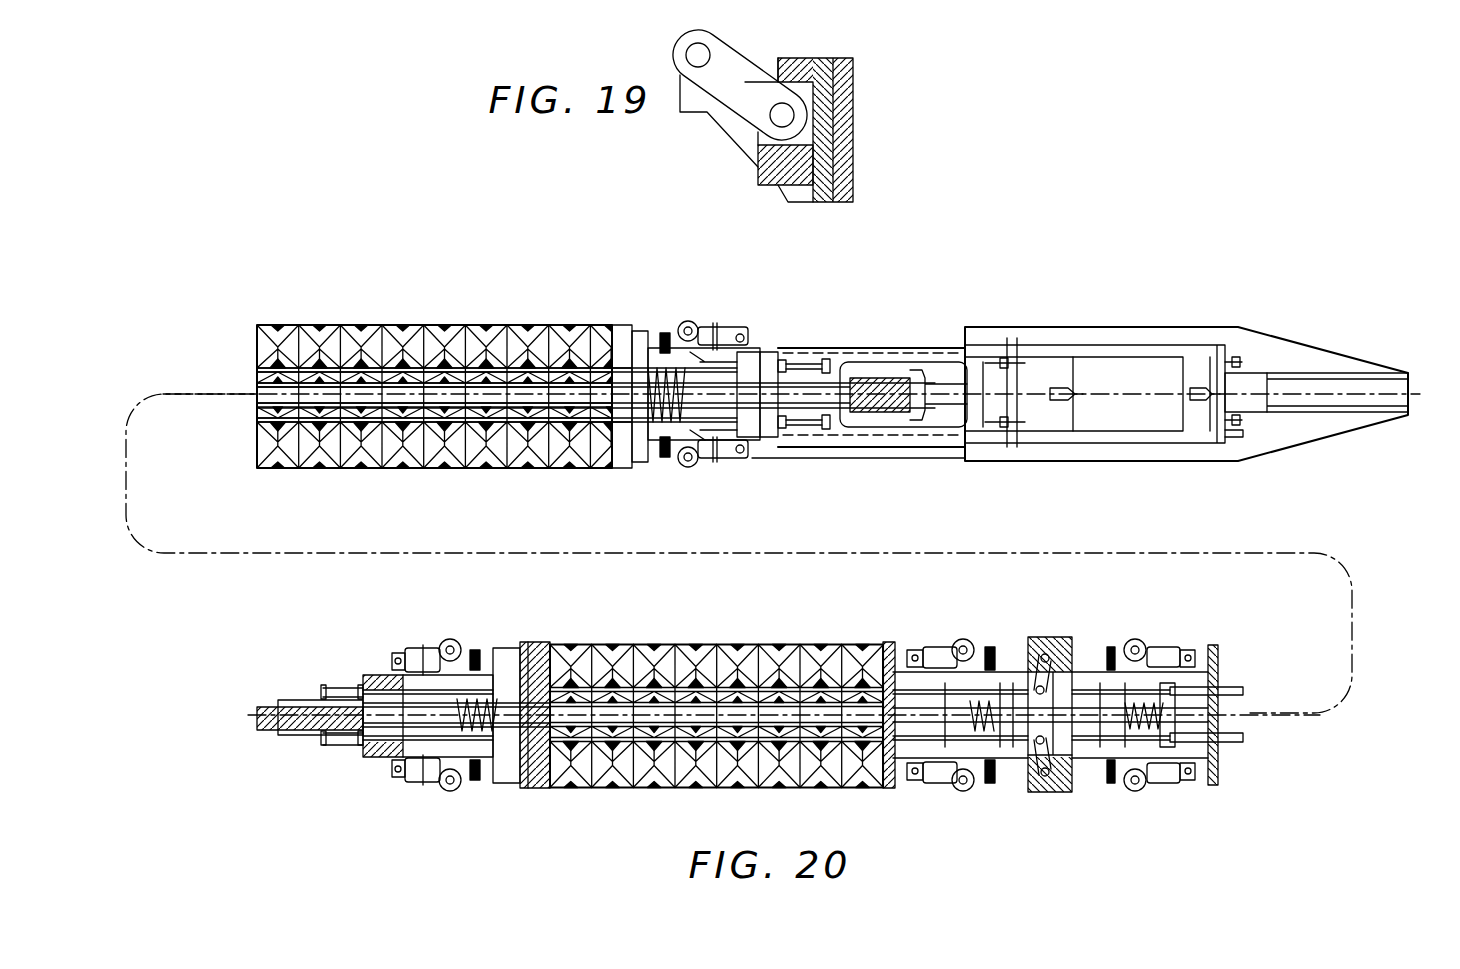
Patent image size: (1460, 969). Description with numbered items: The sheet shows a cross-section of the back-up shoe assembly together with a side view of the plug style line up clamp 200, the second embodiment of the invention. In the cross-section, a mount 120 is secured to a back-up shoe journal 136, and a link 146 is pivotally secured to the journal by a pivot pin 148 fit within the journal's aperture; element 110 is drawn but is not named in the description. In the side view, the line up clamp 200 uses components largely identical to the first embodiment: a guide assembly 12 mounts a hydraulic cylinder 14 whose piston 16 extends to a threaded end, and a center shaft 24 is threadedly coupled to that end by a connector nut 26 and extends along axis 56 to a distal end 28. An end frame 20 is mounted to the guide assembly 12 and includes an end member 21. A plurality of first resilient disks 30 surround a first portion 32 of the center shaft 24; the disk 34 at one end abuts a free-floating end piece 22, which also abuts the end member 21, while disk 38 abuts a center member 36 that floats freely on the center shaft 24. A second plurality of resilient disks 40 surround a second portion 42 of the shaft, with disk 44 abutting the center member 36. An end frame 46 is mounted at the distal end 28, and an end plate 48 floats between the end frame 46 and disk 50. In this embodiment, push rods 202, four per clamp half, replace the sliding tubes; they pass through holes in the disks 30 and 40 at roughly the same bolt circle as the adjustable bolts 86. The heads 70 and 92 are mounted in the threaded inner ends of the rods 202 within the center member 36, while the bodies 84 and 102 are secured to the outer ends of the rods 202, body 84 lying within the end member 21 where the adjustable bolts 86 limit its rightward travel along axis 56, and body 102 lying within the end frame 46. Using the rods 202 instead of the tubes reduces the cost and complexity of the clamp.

In FIG. 20, the guide assembly 12 is at (1100, 327).
In FIG. 20, the hydraulic cylinder 14 is at (1098, 437).
In FIG. 20, the piston 16 is at (948, 383).
In FIG. 20, the end frame 20 is at (876, 348).
In FIG. 20, the end member 21 is at (752, 352).
In FIG. 20, the end piece 22 is at (645, 331).
In FIG. 20, the center shaft 24 is at (256, 402).
In FIG. 20, the connector nut 26 is at (882, 412).
In FIG. 20, the distal end 28 is at (268, 732).
In FIG. 20, the first resilient disks 30 is at (392, 328).
In FIG. 20, the first portion 32 is at (392, 425).
In FIG. 20, the disk 34 is at (612, 326).
In FIG. 20, the center member 36 is at (1083, 632).
In FIG. 20, the disk 38 is at (266, 328).
In FIG. 20, the second resilient disks 40 is at (812, 645).
In FIG. 20, the second portion 42 is at (598, 735).
In FIG. 20, the disk 44 is at (880, 645).
In FIG. 20, the end frame 46 is at (368, 676).
In FIG. 20, the end plate 48 is at (520, 652).
In FIG. 20, the disk 50 is at (536, 645).
In FIG. 20, the axis 56 is at (180, 394).
In FIG. 20, the head 70 is at (1170, 690).
In FIG. 20, the body 84 is at (742, 437).
In FIG. 20, the adjustable bolts 86 is at (800, 364).
In FIG. 20, the head 92 is at (935, 760).
In FIG. 20, the body 102 is at (400, 740).
In FIG. 19, the block 110 is at (855, 126).
In FIG. 19, the mount 120 is at (800, 58).
In FIG. 19, the back-up shoe journal 136 is at (758, 172).
In FIG. 19, the link 146 is at (722, 50).
In FIG. 19, the pivot pin 148 is at (777, 115).
In FIG. 20, the line up clamp 200 is at (1188, 302).
In FIG. 20, the push rods 202 is at (490, 372).